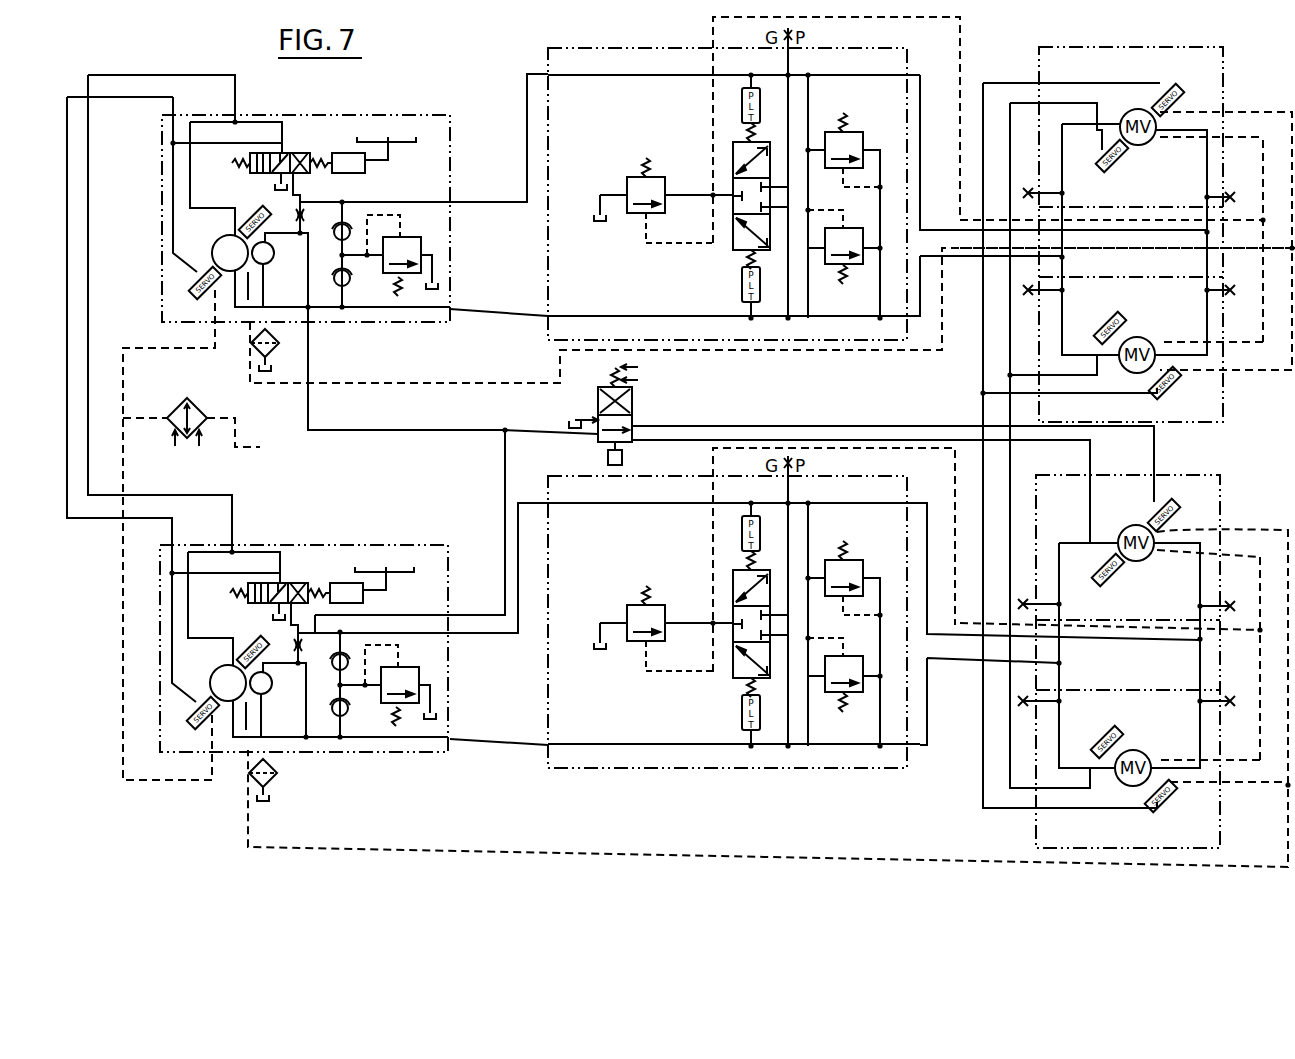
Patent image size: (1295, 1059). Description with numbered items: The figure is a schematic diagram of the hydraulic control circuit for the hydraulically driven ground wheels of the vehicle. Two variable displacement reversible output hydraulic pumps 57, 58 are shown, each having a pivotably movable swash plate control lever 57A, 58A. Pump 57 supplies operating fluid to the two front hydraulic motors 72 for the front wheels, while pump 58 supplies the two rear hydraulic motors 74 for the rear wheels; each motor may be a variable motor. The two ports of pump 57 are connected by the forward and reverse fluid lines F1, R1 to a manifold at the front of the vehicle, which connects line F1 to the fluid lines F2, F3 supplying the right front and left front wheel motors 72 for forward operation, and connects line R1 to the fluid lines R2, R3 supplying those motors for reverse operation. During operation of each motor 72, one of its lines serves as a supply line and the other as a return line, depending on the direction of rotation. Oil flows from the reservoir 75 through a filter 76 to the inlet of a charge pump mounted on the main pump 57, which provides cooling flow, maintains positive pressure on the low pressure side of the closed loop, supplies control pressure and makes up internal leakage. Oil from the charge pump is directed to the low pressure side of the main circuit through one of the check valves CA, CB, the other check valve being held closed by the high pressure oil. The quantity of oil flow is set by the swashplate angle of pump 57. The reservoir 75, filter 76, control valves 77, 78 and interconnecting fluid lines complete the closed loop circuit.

The pump 57 is at (225, 683).
The pump 58 is at (216, 242).
The swash plate control lever 57A is at (330, 580).
The swash plate control lever 58A is at (365, 174).
The front hydraulic motor 72 is at (1129, 661).
The rear hydraulic motor 74 is at (1146, 145).
The reservoir 75 is at (272, 368).
The filter 76 is at (279, 341).
The control valve 77 is at (304, 635).
The control valve 78 is at (306, 204).
The forward fluid line F1 is at (518, 642).
The reverse fluid line R1 is at (500, 738).
The forward fluid line F2 is at (1200, 573).
The reverse fluid line R2 is at (1062, 604).
The forward fluid line F3 is at (1200, 660).
The reverse fluid line R3 is at (1061, 707).
The check valve CA is at (315, 674).
The check valve CB is at (315, 716).